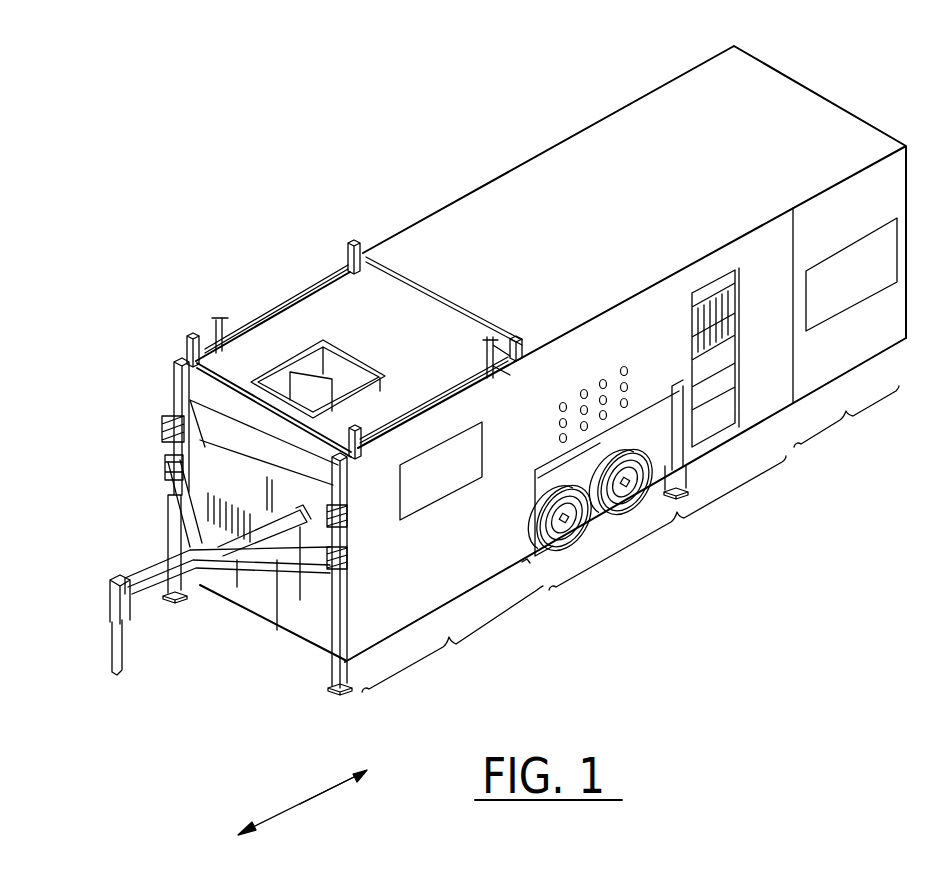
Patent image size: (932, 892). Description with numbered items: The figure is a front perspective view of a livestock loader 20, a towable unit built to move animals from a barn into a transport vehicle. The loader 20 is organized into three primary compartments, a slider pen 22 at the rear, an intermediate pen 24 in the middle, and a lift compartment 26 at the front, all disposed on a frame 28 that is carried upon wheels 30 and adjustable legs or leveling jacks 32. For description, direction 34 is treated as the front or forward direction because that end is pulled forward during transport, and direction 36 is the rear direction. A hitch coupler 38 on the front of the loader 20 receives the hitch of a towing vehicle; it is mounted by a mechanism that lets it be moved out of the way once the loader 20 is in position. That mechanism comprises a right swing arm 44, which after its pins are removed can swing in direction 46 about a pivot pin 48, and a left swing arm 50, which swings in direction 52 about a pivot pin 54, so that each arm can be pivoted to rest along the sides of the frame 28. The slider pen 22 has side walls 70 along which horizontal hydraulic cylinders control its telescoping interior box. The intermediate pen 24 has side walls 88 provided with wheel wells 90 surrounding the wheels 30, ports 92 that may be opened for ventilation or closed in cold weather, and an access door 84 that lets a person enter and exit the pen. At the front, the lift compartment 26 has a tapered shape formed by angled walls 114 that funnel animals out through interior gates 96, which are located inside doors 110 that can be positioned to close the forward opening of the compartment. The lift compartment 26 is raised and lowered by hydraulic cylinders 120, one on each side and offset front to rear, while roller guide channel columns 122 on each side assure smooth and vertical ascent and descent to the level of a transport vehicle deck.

The livestock loader 20 is at (576, 63).
The slider pen 22 is at (846, 423).
The intermediate pen 24 is at (667, 523).
The lift compartment 26 is at (452, 639).
The frame 28 is at (647, 492).
The wheels 30 is at (620, 516).
The leveling jacks 32 is at (692, 480).
The forward direction 34 is at (296, 818).
The rear direction 36 is at (345, 787).
The hitch coupler 38 is at (112, 650).
The right swing arm 44 is at (165, 478).
The swing direction of right arm 46 is at (195, 527).
The pivot pin 48 is at (158, 408).
The left swing arm 50 is at (244, 553).
The swing direction of left arm 52 is at (377, 546).
The pivot pin 54 is at (345, 508).
The side walls 70 is at (850, 208).
The access door 84 is at (730, 384).
The side walls 88 is at (560, 358).
The wheel wells 90 is at (664, 465).
The ports 92 is at (568, 402).
The interior gates 96 is at (193, 520).
The doors 110 is at (215, 595).
The angled walls 114 is at (192, 463).
The hydraulic cylinders 120 is at (215, 322).
The roller guide channel columns 122 is at (356, 243).